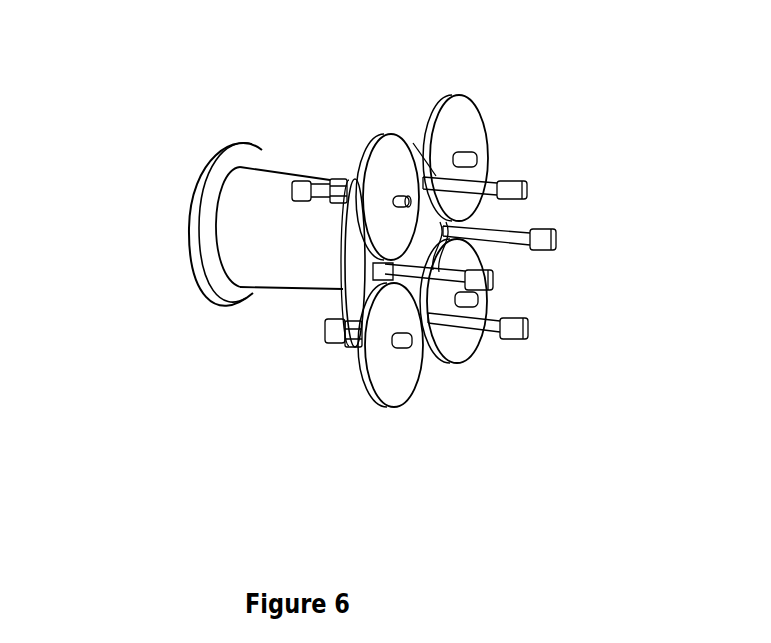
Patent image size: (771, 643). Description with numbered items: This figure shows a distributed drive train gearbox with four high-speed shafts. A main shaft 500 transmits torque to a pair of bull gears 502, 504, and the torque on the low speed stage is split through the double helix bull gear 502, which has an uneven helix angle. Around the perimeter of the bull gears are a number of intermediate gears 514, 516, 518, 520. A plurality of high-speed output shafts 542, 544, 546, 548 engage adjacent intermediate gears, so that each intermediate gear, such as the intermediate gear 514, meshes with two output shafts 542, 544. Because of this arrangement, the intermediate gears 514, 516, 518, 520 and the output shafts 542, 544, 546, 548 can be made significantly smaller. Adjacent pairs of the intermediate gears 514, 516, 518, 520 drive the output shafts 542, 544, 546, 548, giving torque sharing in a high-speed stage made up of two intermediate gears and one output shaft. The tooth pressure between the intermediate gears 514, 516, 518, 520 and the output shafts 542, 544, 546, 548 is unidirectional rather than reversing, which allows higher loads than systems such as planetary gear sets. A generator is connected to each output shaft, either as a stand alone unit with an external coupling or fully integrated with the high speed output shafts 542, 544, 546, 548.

The main shaft 500 is at (217, 222).
The bull gear 502 is at (348, 275).
The bull gear 504 is at (350, 300).
The intermediate gear 514 is at (398, 168).
The intermediate gear 516 is at (469, 111).
The intermediate gear 518 is at (450, 362).
The intermediate gear 520 is at (393, 405).
The high-speed output shaft 542 is at (493, 280).
The high-speed output shaft 544 is at (525, 183).
The high-speed output shaft 546 is at (553, 243).
The high-speed output shaft 548 is at (527, 340).